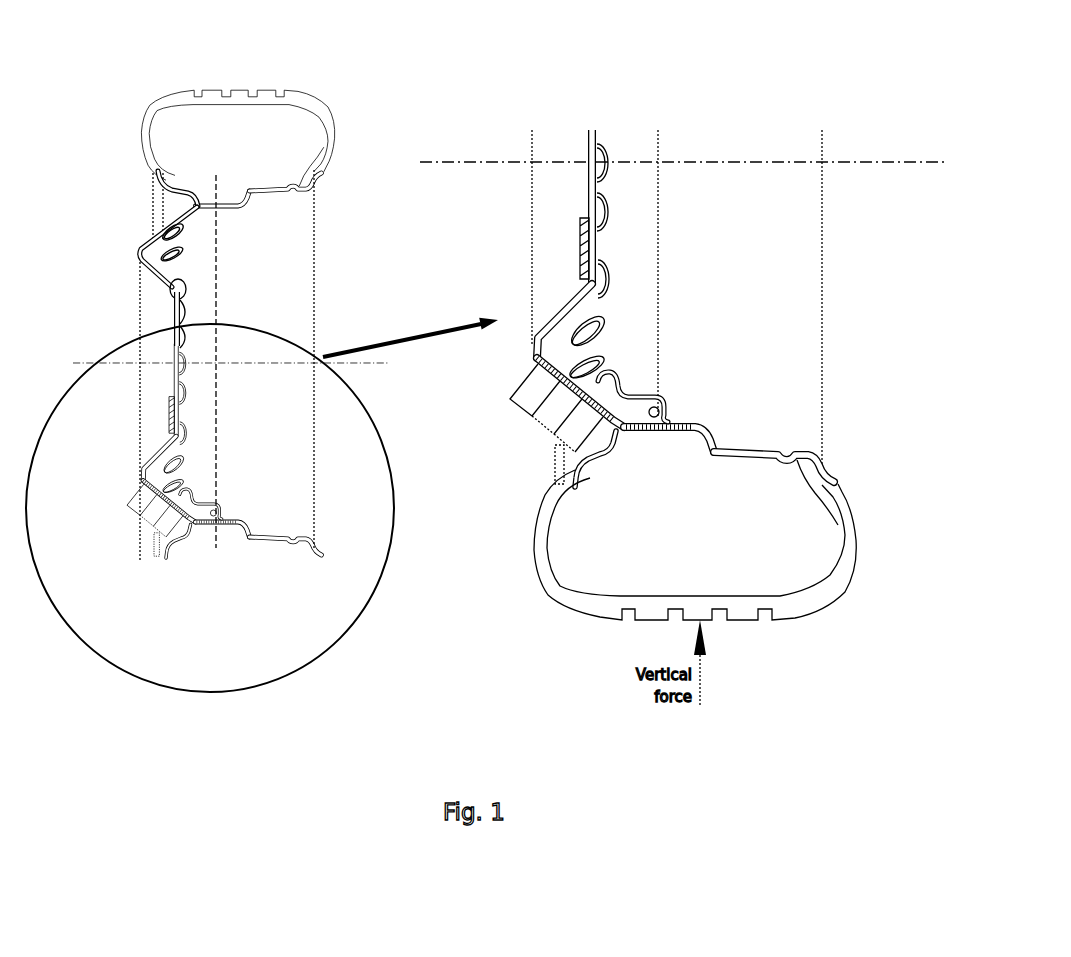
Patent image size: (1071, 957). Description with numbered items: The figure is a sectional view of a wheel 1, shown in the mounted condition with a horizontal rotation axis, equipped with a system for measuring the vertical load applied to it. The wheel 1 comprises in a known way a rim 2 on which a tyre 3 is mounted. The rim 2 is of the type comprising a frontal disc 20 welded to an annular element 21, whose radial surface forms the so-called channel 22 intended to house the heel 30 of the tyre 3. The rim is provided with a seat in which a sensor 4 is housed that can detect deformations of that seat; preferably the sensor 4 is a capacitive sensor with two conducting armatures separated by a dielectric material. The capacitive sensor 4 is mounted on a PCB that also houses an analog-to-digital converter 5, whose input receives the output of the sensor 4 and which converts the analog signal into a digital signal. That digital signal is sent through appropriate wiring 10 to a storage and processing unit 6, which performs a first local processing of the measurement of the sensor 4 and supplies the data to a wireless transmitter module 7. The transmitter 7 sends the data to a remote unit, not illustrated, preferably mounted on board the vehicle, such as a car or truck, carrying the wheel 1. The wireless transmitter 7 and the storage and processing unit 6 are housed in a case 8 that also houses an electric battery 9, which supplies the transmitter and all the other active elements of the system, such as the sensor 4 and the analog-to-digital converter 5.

The wheel 1 is at (105, 43).
The rim 2 is at (142, 256).
The tyre 3 is at (845, 500).
The sensor 4 is at (678, 424).
The analog-to-digital converter 5 is at (670, 418).
The storage and processing unit 6 is at (590, 430).
The wireless transmitter module 7 is at (587, 402).
The case 8 is at (525, 402).
The electric battery 9 is at (507, 381).
The wiring 10 is at (613, 375).
The frontal disc 20 is at (530, 225).
The annular element 21 is at (548, 313).
The channel 22 is at (746, 455).
The heel 30 is at (583, 470).